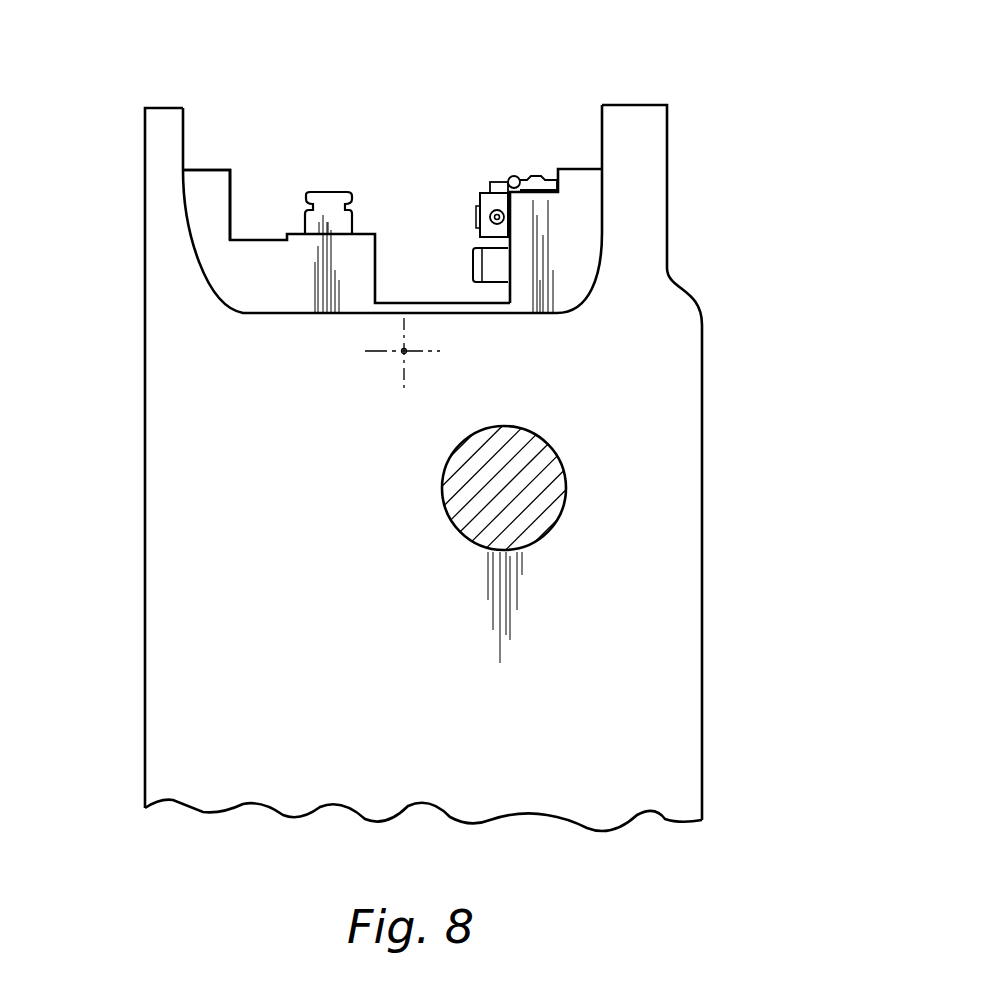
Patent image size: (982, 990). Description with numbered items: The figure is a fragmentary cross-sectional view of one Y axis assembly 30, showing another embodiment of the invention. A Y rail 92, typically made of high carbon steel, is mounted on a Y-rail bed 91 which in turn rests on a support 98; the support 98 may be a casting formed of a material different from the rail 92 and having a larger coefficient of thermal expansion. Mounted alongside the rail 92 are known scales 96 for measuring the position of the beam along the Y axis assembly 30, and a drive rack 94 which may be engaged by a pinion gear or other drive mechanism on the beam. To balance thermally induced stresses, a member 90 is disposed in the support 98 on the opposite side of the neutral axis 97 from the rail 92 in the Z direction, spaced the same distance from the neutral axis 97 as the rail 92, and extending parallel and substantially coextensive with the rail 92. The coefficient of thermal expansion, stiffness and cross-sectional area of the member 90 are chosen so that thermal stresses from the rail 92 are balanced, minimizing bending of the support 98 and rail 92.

The Y axis assembly 30 is at (720, 118).
The member 90 is at (553, 451).
The Y-rail bed 91 is at (207, 173).
The Y rail 92 is at (322, 193).
The drive rack 94 is at (473, 262).
The scales 96 is at (488, 200).
The neutral axis 97 is at (403, 354).
The support 98 is at (158, 401).